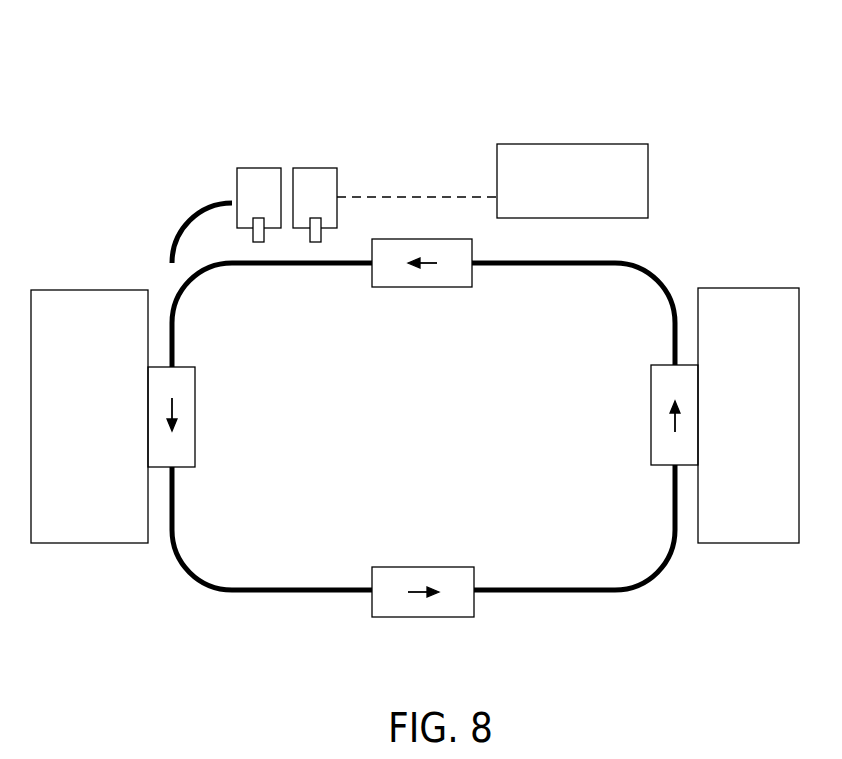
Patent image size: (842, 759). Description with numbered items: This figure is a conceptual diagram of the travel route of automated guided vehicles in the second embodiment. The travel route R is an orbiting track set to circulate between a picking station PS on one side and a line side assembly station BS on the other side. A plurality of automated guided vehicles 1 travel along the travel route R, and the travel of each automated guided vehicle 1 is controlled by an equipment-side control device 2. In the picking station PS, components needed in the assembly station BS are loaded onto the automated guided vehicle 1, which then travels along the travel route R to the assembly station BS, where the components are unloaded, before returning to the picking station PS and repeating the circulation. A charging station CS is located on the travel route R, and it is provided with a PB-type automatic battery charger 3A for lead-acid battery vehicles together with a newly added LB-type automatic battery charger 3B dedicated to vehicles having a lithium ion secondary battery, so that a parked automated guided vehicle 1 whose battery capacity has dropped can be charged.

The automated guided vehicle 1 is at (398, 258).
The equipment-side control device 2 is at (602, 158).
The PB-type automatic battery charger 3A is at (316, 182).
The LB-type automatic battery charger 3B is at (262, 182).
The travel route R is at (562, 590).
The charging station CS is at (202, 238).
The assembly station BS is at (89, 289).
The picking station PS is at (748, 287).